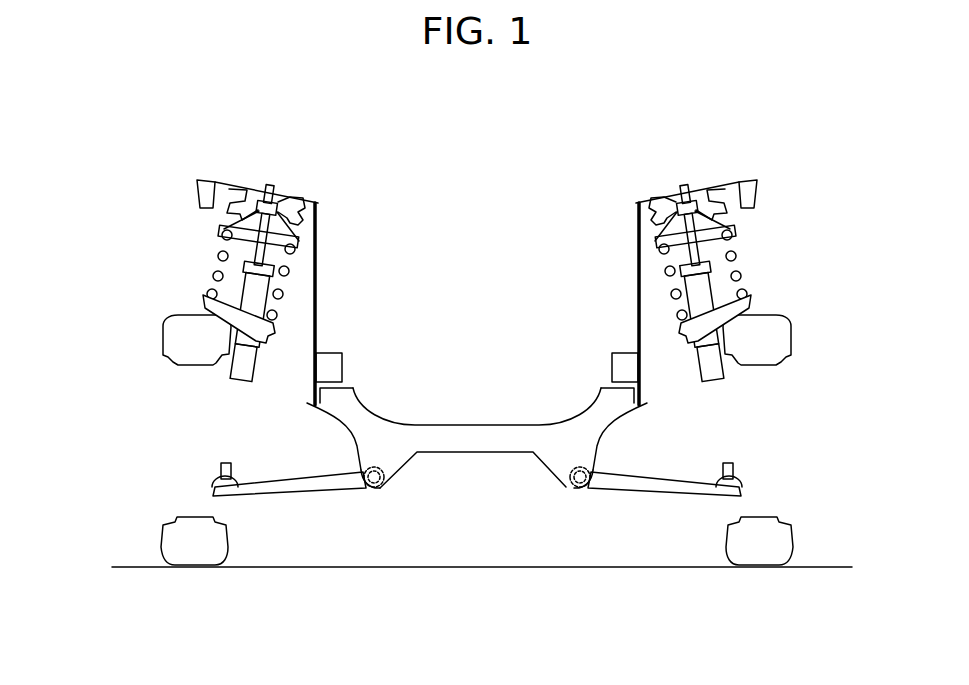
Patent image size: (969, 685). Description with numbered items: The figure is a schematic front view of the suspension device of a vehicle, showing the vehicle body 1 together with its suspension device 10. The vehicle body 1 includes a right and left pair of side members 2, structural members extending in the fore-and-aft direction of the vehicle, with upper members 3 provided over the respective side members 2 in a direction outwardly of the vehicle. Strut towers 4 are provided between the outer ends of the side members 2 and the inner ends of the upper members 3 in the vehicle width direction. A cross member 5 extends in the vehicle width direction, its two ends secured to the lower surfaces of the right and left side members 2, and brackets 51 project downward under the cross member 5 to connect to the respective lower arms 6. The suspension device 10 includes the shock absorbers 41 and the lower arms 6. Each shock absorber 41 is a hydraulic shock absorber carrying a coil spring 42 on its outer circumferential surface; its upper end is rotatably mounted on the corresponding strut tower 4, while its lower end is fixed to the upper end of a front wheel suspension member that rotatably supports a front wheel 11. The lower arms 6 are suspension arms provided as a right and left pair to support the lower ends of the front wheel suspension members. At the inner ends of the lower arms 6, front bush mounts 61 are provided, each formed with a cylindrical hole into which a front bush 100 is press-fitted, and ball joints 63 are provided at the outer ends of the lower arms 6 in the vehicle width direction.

The vehicle body 1 is at (229, 141).
The side member 2 is at (342, 352).
The upper member 3 is at (196, 192).
The strut tower 4 is at (317, 205).
The cross member 5 is at (446, 426).
The lower arm 6 is at (285, 478).
The suspension device 10 is at (131, 389).
The front wheel 11 is at (163, 340).
The shock absorber 41 is at (241, 276).
The coil spring 42 is at (223, 256).
The bracket 51 is at (566, 458).
The front bush mount 61 is at (367, 492).
The ball joint 63 is at (213, 487).
The front bush 100 is at (383, 486).